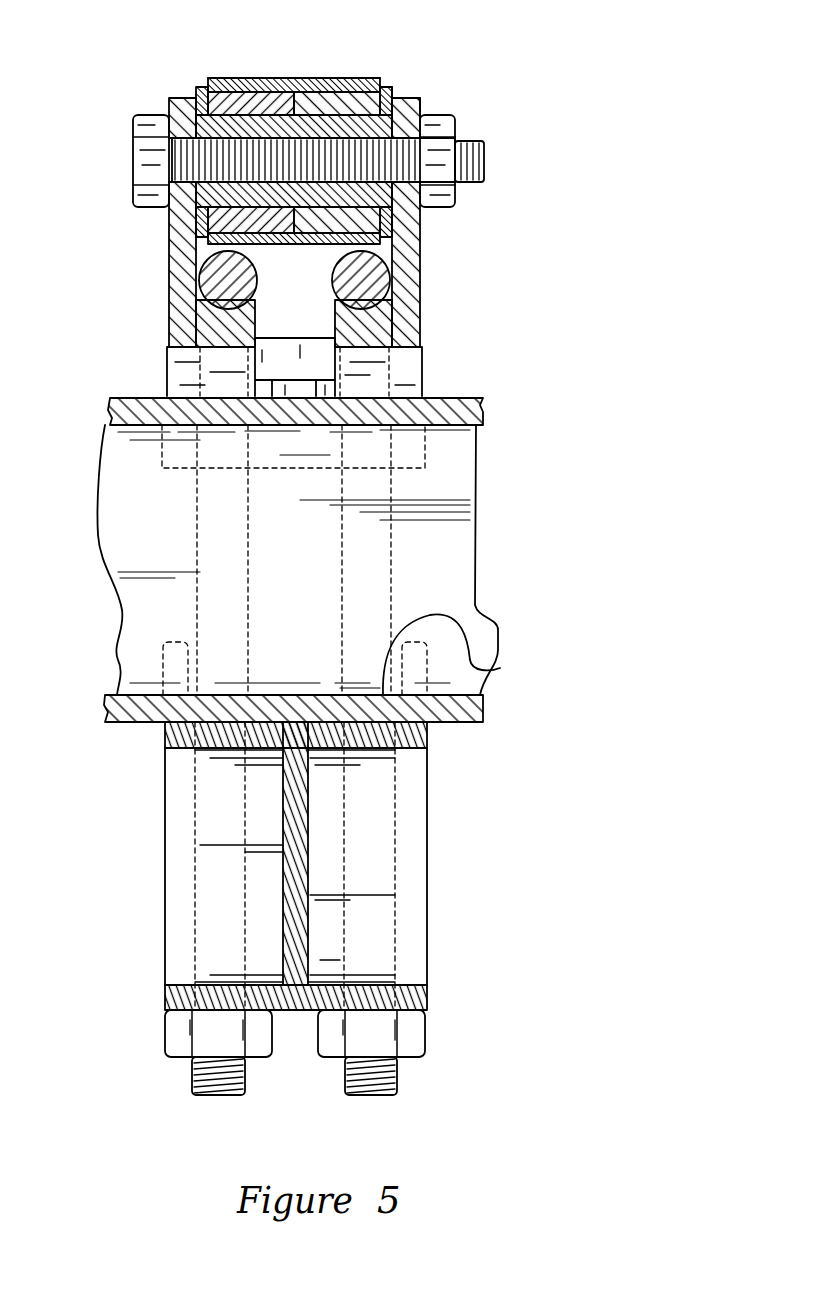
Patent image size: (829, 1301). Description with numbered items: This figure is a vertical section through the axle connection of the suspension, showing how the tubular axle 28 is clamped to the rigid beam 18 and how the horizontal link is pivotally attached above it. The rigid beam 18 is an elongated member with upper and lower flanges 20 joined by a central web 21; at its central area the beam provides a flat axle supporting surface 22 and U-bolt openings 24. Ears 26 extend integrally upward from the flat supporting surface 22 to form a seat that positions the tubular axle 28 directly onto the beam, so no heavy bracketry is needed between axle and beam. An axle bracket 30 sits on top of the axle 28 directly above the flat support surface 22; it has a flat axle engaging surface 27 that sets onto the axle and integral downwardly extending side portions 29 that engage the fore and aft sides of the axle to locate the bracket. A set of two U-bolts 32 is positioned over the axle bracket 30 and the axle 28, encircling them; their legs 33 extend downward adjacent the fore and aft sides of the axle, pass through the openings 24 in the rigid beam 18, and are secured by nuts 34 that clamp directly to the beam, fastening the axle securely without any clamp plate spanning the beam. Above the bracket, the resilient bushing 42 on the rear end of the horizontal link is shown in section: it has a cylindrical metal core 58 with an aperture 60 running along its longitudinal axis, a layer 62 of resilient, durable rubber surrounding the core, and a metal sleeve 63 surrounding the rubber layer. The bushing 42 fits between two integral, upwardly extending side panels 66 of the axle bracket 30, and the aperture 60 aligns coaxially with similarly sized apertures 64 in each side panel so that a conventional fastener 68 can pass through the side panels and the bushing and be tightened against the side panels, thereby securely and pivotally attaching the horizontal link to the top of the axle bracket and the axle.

The rigid beam 18 is at (405, 883).
The upper and lower flanges 20 is at (408, 745).
The central web 21 is at (298, 837).
The flat axle supporting surface 22 is at (481, 697).
The U-bolt openings 24 is at (165, 745).
The ears 26 is at (177, 655).
The flat axle engaging surface 27 is at (392, 393).
The tubular axle 28 is at (450, 472).
The side portions 29 is at (200, 455).
The axle bracket 30 is at (407, 342).
The U-bolts 32 is at (377, 272).
The legs 33 is at (385, 573).
The nuts 34 is at (413, 1030).
The resilient bushing 42 is at (386, 81).
The cylindrical metal core 58 is at (285, 112).
The aperture 60 is at (416, 114).
The layer of resilient rubber 62 is at (245, 104).
The metal sleeve 63 is at (332, 83).
The apertures 64 is at (455, 115).
The side panels 66 is at (408, 217).
The fastener 68 is at (430, 157).